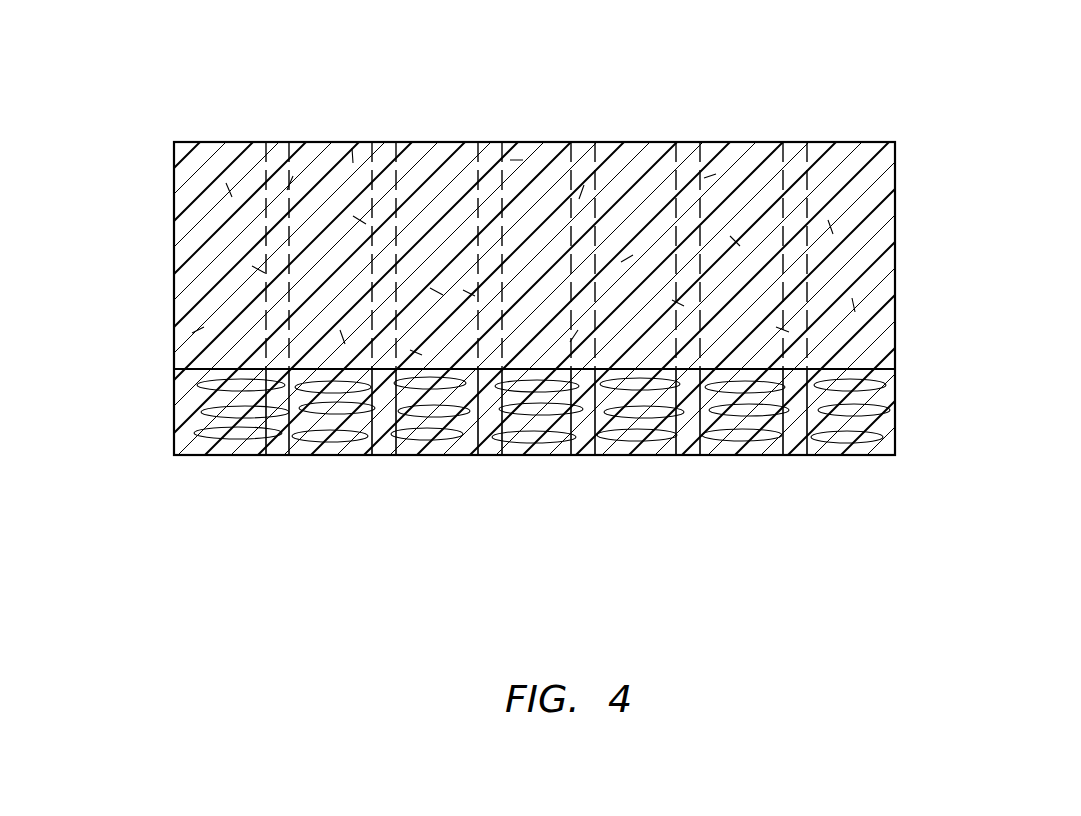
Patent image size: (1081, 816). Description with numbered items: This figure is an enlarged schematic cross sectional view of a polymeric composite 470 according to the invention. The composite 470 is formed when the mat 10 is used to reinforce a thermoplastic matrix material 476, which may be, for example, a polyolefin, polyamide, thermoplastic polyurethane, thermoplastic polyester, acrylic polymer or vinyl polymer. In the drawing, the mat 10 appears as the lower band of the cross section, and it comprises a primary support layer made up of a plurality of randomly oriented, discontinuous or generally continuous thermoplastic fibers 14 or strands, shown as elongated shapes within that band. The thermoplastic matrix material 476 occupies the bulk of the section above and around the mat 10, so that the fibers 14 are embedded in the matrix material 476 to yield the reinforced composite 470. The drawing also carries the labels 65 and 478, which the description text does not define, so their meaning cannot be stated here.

The composite article 470 is at (895, 213).
The polymeric matrix layer 65 is at (262, 217).
The glass fiber strand mat 10 is at (175, 403).
The reinforcing fibers 476 is at (795, 167).
The glass fiber strands 14 is at (208, 453).
The filler particles 478 is at (857, 285).